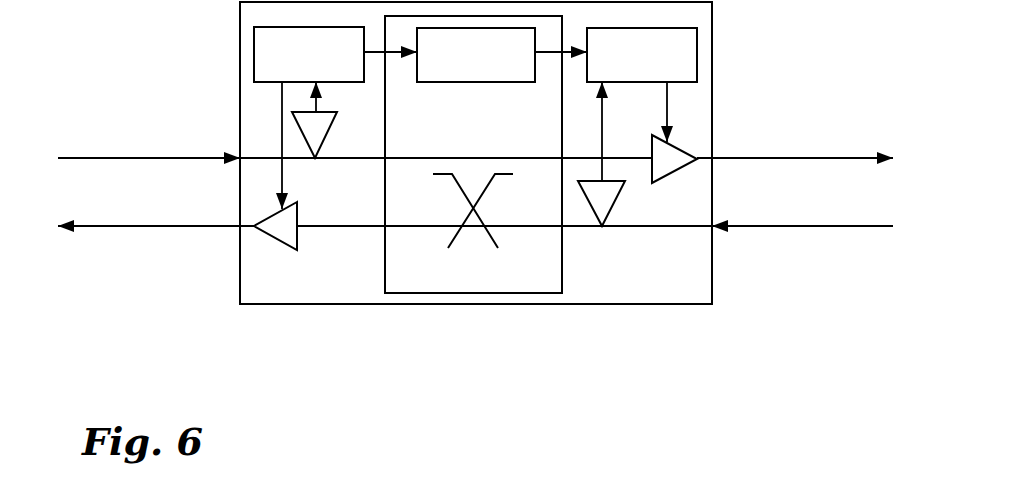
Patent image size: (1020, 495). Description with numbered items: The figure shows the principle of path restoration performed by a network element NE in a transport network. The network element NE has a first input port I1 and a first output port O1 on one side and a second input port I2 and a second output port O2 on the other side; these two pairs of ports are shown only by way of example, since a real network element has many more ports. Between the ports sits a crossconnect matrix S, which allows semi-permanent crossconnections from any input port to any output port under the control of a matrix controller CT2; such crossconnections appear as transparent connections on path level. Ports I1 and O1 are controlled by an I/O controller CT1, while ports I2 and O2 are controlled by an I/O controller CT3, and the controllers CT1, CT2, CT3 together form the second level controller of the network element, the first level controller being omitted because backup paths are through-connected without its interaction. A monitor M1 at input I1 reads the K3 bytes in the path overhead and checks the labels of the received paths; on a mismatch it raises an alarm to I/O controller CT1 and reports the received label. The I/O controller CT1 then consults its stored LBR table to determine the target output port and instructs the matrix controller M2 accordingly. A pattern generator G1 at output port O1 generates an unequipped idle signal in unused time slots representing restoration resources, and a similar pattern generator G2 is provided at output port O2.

The network element NE is at (729, 381).
The crossconnect matrix S is at (473, 184).
The I/O controller CT1 is at (309, 54).
The matrix controller CT2 is at (476, 55).
The I/O controller CT3 is at (642, 55).
The first input port I1 is at (355, 136).
The second input port I2 is at (595, 209).
The first output port O1 is at (166, 208).
The second output port O2 is at (782, 138).
The monitor M1 is at (331, 138).
The matrix controller M2 is at (624, 174).
The pattern generator G1 is at (294, 183).
The pattern generator G2 is at (710, 132).